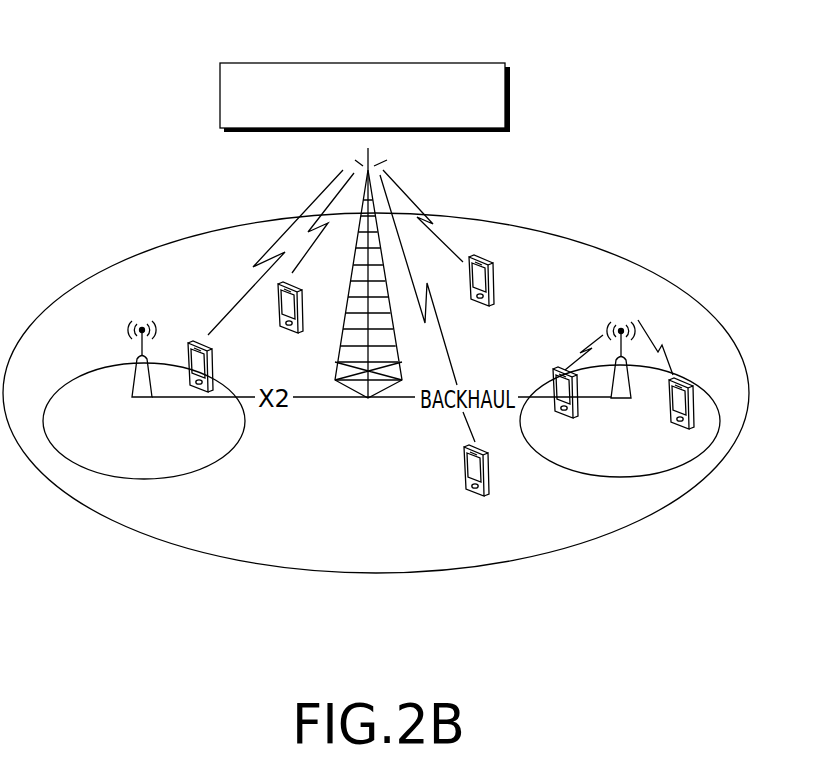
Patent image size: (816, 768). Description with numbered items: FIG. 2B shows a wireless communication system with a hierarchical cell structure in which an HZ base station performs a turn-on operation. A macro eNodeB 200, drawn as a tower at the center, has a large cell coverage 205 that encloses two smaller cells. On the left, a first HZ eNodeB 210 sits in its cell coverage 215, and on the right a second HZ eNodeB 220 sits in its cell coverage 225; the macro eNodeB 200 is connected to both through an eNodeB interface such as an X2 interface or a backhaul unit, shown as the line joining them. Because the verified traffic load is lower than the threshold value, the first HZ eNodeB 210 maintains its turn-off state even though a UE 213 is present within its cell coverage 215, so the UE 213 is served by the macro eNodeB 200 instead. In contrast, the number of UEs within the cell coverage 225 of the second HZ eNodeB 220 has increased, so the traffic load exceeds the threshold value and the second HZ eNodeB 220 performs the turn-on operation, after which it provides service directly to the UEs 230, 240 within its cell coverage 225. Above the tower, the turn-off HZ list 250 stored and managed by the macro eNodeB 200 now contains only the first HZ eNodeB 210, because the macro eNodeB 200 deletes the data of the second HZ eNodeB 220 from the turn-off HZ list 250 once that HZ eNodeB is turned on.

The macro eNodeB 200 is at (368, 399).
The cell coverage 205 is at (750, 388).
The first HZ eNodeB 210 is at (126, 333).
The UE 213 is at (217, 366).
The cell coverage 215 is at (193, 474).
The second HZ eNodeB 220 is at (608, 325).
The cell coverage 225 is at (582, 478).
The UE 230 is at (557, 366).
The UE 240 is at (684, 377).
The turn-off HZ list 250 is at (370, 62).